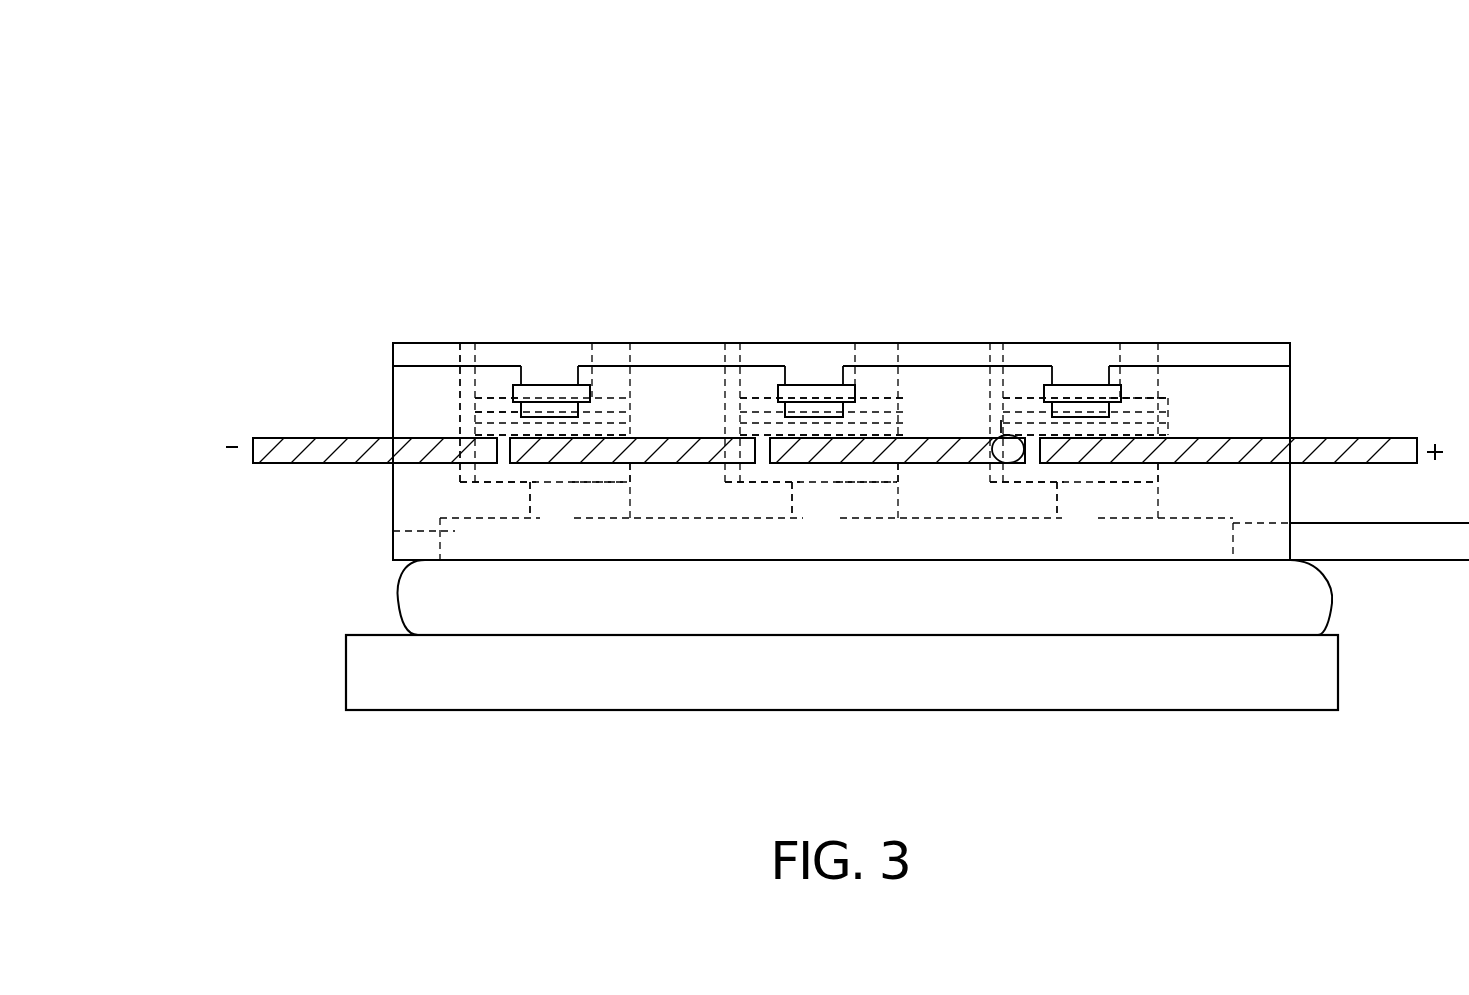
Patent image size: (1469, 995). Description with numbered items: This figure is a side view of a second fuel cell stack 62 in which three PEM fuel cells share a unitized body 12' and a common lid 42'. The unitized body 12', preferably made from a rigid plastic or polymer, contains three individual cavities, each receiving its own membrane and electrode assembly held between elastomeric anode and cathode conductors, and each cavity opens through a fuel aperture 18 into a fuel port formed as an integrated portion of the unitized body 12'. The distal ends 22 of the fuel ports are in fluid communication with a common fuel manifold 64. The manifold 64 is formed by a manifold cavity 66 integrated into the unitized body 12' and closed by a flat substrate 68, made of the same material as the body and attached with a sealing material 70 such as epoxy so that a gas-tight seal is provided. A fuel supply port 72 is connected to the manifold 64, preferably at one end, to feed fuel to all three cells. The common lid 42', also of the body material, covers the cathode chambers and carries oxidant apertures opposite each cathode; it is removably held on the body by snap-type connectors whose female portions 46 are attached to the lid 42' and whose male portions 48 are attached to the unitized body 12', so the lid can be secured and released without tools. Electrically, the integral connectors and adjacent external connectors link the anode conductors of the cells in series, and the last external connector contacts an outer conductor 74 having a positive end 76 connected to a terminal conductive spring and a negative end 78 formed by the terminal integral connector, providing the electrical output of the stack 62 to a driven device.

The unitized body 12' is at (774, 361).
The fuel aperture 18 is at (809, 487).
The distal end 22 is at (836, 519).
The common lid 42' is at (882, 347).
The female portion 46 is at (558, 377).
The male portion 48 is at (533, 395).
The second fuel cell stack 62 is at (648, 750).
The common fuel manifold 64 is at (393, 531).
The manifold cavity 66 is at (720, 541).
The flat substrate 68 is at (464, 681).
The sealing material 70 is at (482, 608).
The fuel supply port 72 is at (1406, 555).
The outer conductor 74 is at (1335, 438).
The positive end 76 is at (1418, 440).
The negative end 78 is at (258, 461).